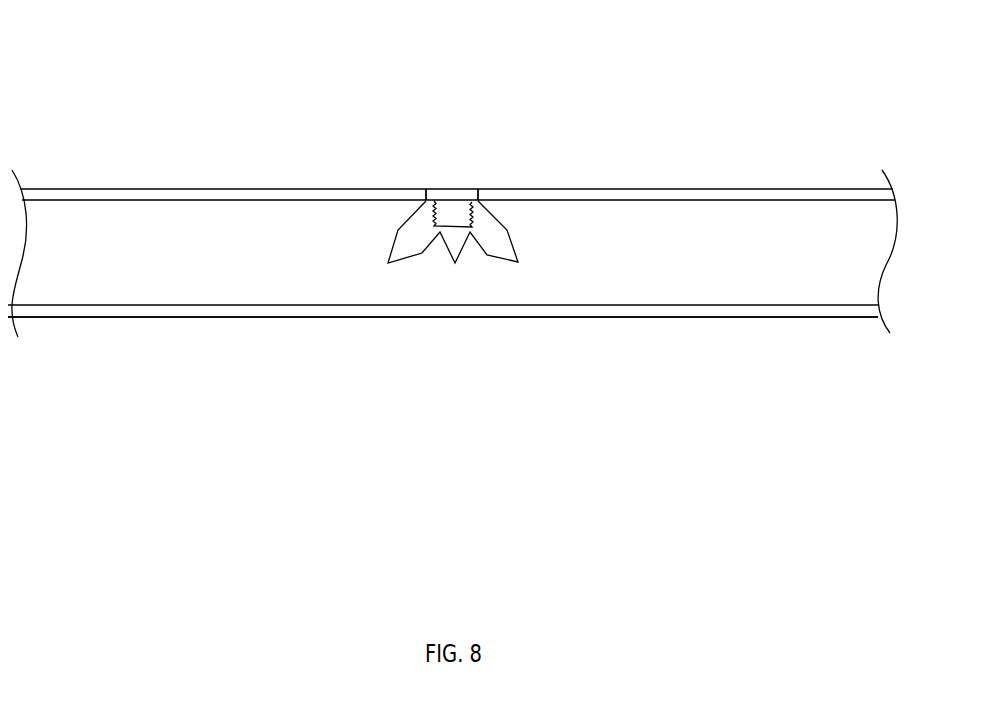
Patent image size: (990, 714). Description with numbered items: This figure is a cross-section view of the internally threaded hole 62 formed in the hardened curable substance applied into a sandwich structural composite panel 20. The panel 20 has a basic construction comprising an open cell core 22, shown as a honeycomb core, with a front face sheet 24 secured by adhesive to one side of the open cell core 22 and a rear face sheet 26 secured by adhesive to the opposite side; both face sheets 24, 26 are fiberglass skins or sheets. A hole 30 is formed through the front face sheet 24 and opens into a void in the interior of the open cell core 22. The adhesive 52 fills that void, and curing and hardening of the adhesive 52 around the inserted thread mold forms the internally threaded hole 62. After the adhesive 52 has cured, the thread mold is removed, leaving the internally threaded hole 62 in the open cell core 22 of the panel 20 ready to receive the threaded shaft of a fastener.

The sandwich structural composite panel 20 is at (757, 189).
The open cell core 22 is at (842, 253).
The front face sheet 24 is at (68, 189).
The rear face sheet 26 is at (68, 310).
The opening 30 is at (467, 188).
The adhesive 52 is at (405, 247).
The internally threaded hole 62 is at (450, 212).